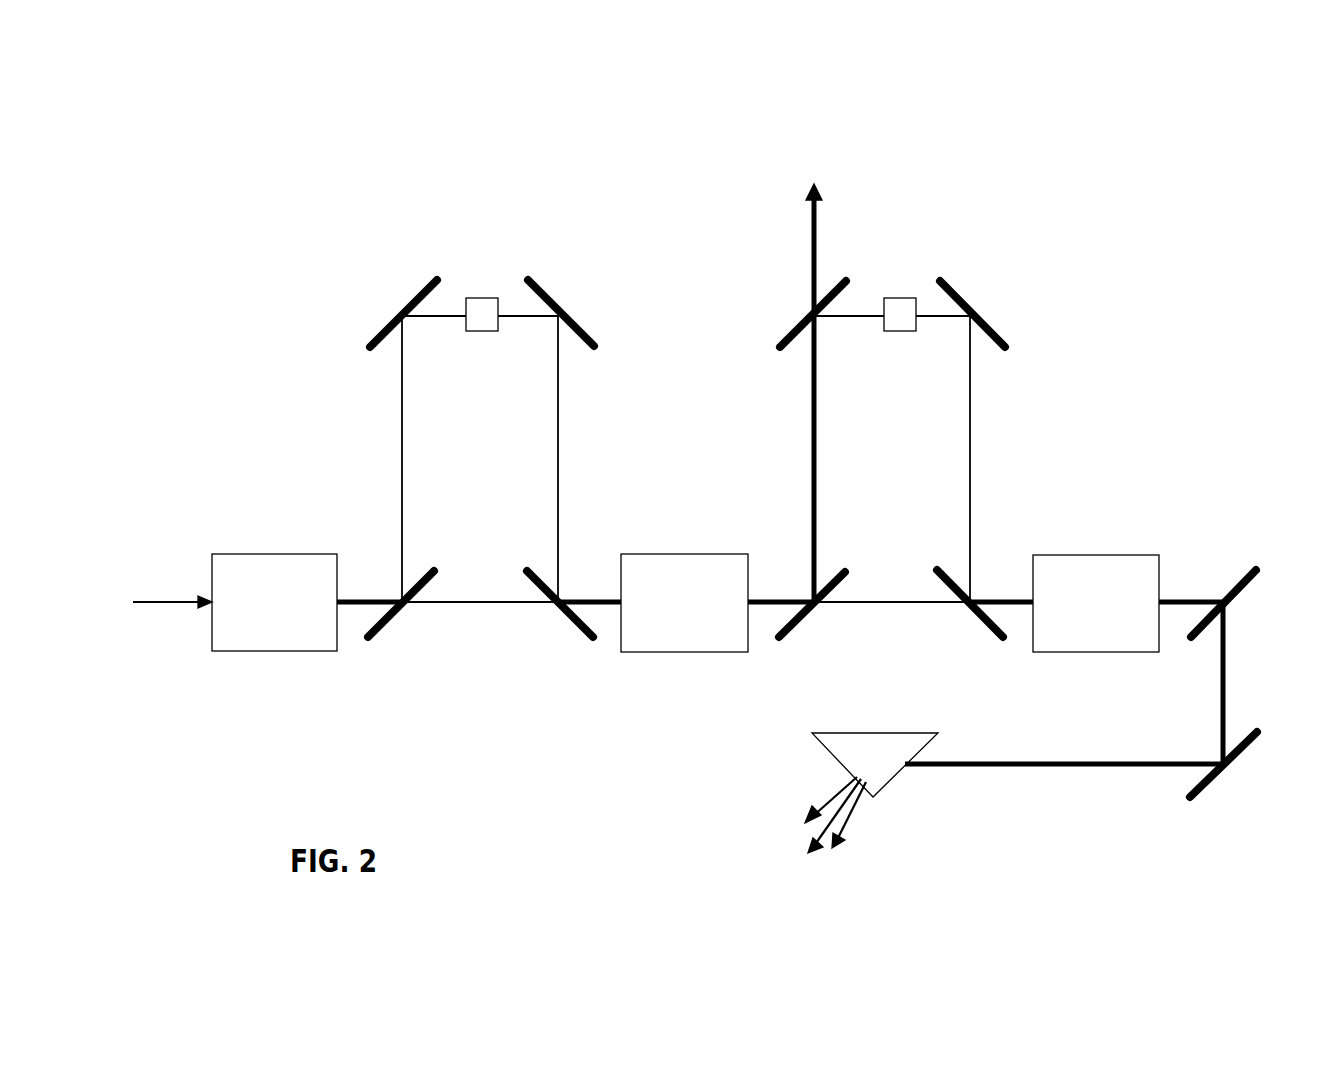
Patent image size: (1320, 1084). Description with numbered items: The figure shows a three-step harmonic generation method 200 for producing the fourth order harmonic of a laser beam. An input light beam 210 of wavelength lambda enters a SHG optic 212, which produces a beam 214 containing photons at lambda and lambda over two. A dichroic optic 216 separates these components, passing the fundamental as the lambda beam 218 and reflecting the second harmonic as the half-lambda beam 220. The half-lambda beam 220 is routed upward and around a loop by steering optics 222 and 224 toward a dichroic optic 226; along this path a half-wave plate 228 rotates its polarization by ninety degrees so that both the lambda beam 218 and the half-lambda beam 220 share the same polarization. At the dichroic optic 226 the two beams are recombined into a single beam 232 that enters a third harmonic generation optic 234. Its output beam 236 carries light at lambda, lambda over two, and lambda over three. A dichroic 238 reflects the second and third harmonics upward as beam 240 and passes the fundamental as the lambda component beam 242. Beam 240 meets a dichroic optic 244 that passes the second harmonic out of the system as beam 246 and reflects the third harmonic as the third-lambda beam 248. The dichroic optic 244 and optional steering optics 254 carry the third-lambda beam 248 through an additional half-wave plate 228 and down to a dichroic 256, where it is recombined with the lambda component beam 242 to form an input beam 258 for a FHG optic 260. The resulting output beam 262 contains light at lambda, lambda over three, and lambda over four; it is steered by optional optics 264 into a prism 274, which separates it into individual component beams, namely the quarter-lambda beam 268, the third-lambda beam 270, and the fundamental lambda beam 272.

The harmonic generation method 200 is at (267, 185).
The input light beam 210 is at (147, 598).
The SHG optic 212 is at (245, 652).
The beam 214 is at (360, 600).
The dichroic optic 216 is at (384, 640).
The lambda beam 218 is at (480, 600).
The lambda/2 beam 220 is at (402, 453).
The steering optic 222 is at (383, 330).
The steering optic 224 is at (590, 332).
The dichroic optic 226 is at (570, 640).
The half-wave plate 228 is at (481, 298).
The single beam 232 is at (595, 600).
The third harmonic generation optic (THG) 234 is at (692, 652).
The output beam 236 is at (765, 600).
The dichroic 238 is at (795, 645).
The beam 240 is at (811, 451).
The lambda component beam 242 is at (885, 602).
The dichroic optic 244 is at (792, 335).
The beam 246 is at (810, 237).
The lambda/3 beam 248 is at (843, 318).
The steering optics 254 is at (1000, 332).
The dichroic 256 is at (988, 642).
The input beam 258 is at (1017, 602).
The FHG optic 260 is at (1096, 555).
The output beam 262 is at (1222, 663).
The optional optics 264 is at (1210, 570).
The lambda/4 component beam 268 is at (845, 842).
The lambda/3 component beam 270 is at (818, 840).
The lambda component beam 272 is at (813, 808).
The prism 274 is at (896, 777).